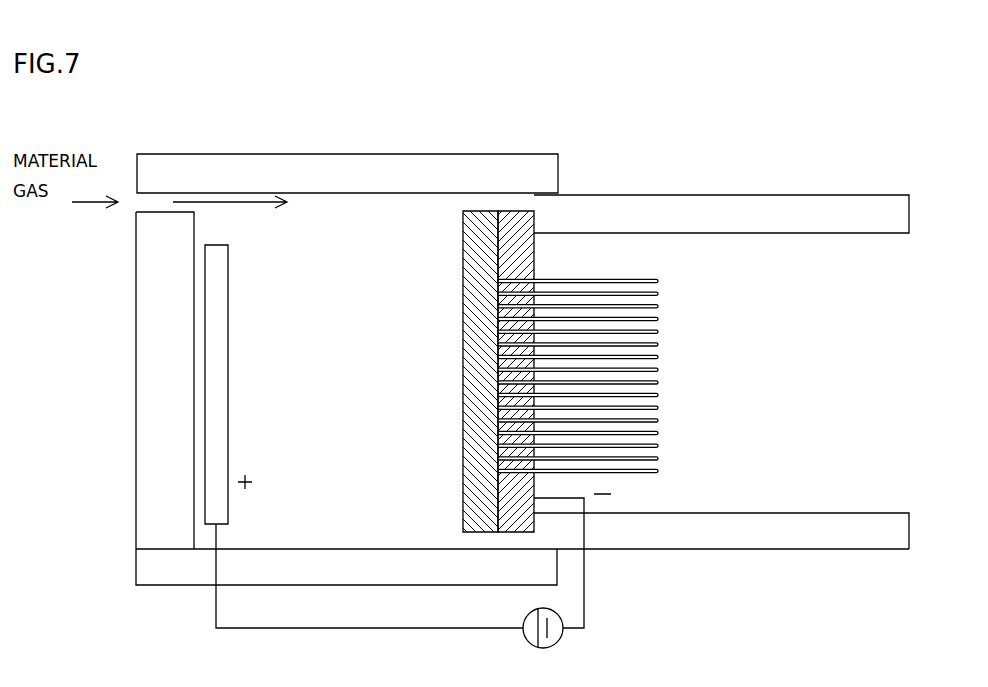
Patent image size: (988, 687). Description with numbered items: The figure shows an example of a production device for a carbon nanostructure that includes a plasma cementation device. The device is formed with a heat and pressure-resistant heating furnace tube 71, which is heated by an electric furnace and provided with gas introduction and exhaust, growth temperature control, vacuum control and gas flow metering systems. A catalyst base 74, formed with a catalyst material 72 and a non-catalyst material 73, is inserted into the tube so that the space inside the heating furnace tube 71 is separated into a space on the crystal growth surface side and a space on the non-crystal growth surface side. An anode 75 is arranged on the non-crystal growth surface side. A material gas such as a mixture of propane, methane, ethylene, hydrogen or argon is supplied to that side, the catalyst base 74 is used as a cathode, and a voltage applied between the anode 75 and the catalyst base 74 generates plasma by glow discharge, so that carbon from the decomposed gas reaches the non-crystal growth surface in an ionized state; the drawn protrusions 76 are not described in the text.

The heat and pressure-resistant heating furnace tube 71 is at (256, 165).
The catalyst material 72 is at (479, 223).
The non-catalyst material 73 is at (523, 223).
The catalyst base 74 is at (581, 305).
The anode 75 is at (217, 464).
The comb-shaped protrusions 76 is at (656, 380).